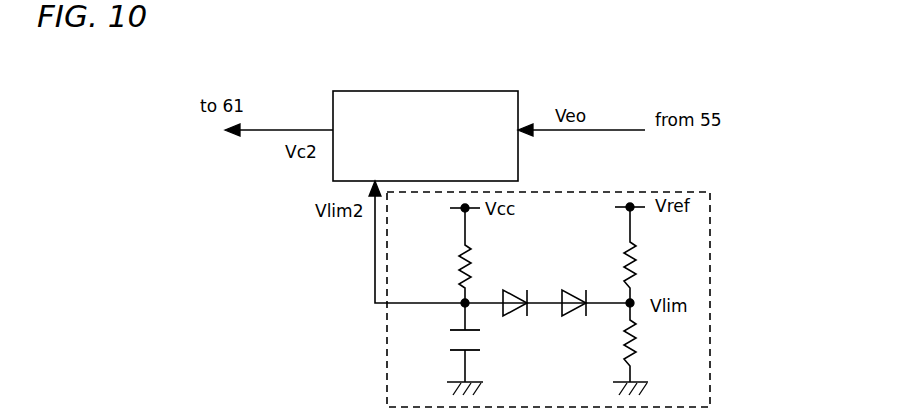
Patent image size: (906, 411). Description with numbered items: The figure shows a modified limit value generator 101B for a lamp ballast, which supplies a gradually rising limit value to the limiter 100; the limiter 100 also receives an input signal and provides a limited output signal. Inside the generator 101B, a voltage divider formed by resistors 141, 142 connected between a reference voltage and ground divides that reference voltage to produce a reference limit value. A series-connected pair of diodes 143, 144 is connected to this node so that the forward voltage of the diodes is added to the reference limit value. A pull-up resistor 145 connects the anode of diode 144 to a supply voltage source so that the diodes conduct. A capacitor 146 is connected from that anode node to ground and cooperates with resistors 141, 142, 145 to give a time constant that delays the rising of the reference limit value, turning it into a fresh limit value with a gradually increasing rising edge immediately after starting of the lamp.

The limiter 100 is at (425, 136).
The limit value generator 101B is at (710, 325).
The resistor 141 is at (645, 277).
The resistor 142 is at (643, 337).
The diode 143 is at (565, 328).
The diode 144 is at (523, 328).
The pull-up resistor 145 is at (480, 272).
The capacitor 146 is at (450, 337).